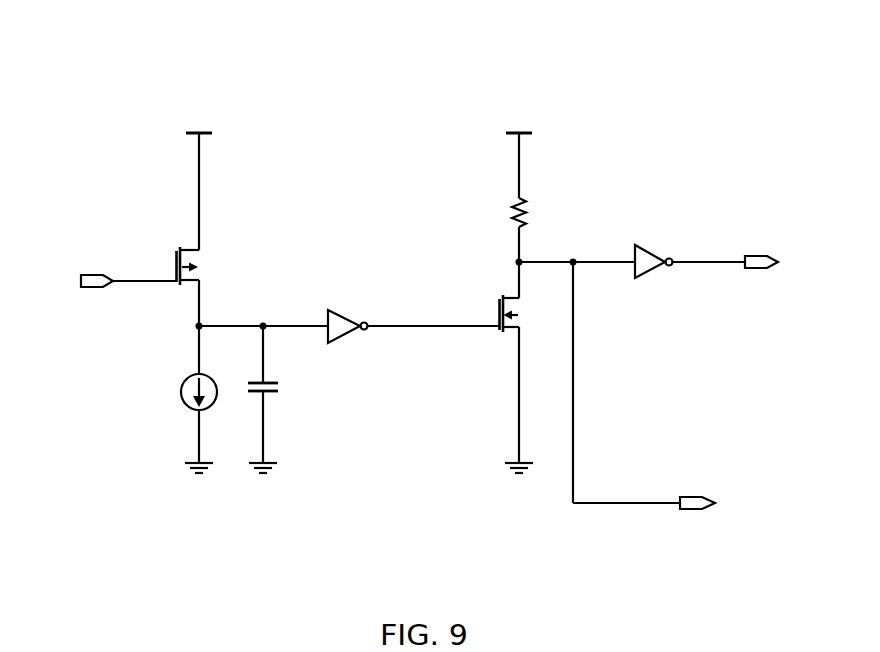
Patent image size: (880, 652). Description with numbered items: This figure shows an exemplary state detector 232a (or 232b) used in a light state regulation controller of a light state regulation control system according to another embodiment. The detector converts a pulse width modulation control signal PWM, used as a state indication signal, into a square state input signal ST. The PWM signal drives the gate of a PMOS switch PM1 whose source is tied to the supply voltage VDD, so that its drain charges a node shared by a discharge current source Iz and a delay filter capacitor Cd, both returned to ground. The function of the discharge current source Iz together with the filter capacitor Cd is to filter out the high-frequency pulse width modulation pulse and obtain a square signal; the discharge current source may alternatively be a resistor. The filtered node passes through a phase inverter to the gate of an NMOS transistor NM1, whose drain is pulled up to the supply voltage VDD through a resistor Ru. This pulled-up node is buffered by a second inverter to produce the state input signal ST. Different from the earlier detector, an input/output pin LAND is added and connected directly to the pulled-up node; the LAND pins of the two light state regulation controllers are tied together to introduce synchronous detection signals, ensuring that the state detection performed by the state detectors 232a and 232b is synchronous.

The state detector 232a is at (175, 39).
The state detector 232b is at (395, 310).
The PMOS switch PM1 is at (214, 286).
The NMOS transistor NM1 is at (534, 367).
The pull-up resistor Ru is at (513, 186).
The delay filter capacitor Cd is at (282, 399).
The discharge current source Iz is at (187, 399).
The PWM control signal PWM is at (94, 281).
The state input signal ST is at (706, 255).
The input/output pin LAND is at (649, 385).
The supply voltage VDD is at (199, 180).